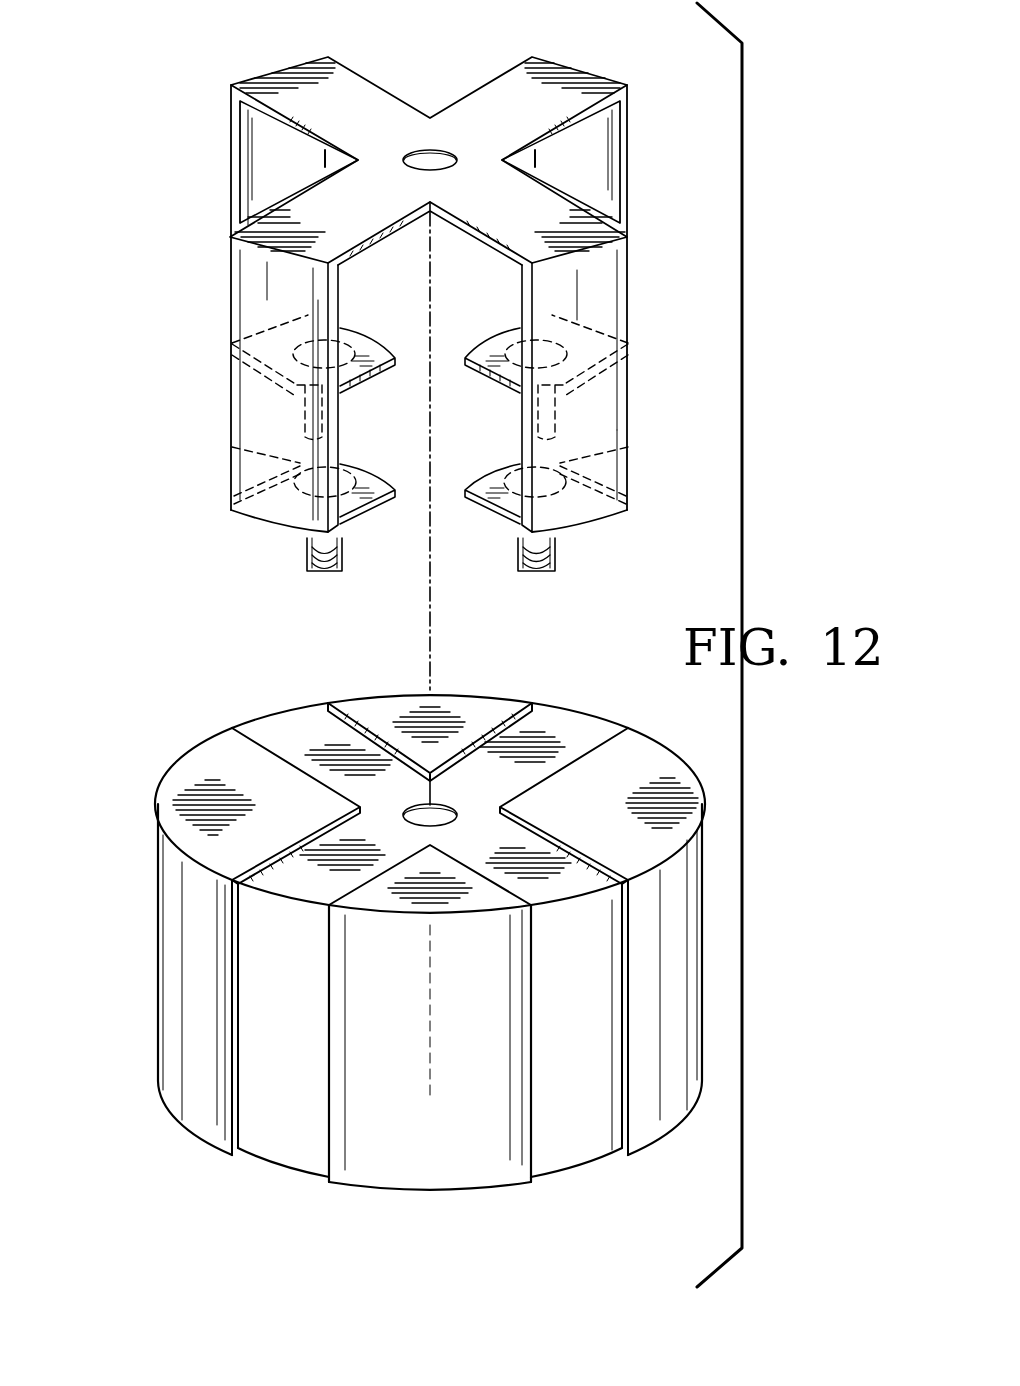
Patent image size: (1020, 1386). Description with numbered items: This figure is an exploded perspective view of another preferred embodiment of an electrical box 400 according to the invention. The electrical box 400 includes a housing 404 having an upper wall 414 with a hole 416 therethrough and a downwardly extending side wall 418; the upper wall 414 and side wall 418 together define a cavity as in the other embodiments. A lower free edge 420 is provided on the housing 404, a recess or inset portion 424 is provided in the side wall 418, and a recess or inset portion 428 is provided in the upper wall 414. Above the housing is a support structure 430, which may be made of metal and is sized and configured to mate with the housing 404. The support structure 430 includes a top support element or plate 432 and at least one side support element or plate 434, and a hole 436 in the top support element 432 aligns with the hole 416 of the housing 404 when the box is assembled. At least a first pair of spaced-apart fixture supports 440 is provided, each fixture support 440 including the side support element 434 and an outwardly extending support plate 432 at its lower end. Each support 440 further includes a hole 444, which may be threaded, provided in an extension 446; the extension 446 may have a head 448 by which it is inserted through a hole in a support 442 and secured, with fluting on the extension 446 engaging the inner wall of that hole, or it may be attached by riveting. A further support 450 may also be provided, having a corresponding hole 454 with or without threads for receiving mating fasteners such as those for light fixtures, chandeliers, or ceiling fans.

The electrical box 400 is at (178, 637).
The housing 404 is at (145, 893).
The upper wall 414 is at (213, 785).
The hole 416 is at (637, 797).
The side wall 418 is at (177, 975).
The lower free edge 420 is at (390, 1190).
The recess or inset portion 424 is at (240, 1142).
The recess or inset portion 428 is at (327, 706).
The support structure 430 is at (216, 154).
The top support element or plate 432 is at (346, 226).
The side support element or plate 434 is at (248, 178).
The hole 436 is at (440, 148).
The fixture support 440 is at (626, 160).
The support 442 is at (396, 491).
The hole 444 is at (322, 568).
The extension 446 is at (306, 542).
The head 448 is at (232, 446).
The further support 450 is at (249, 125).
The hole 454 is at (532, 572).